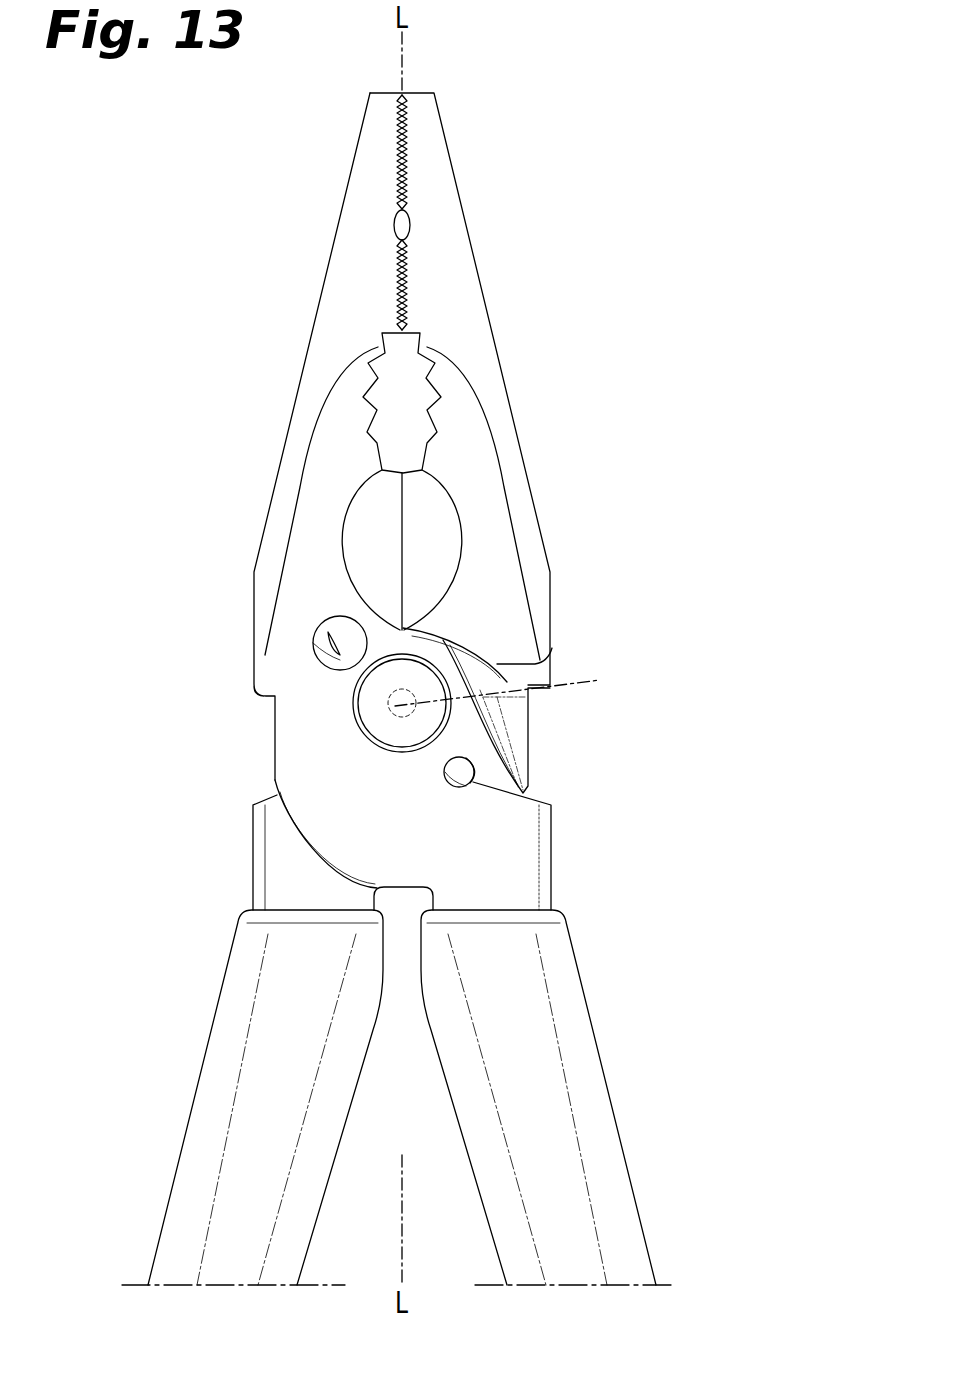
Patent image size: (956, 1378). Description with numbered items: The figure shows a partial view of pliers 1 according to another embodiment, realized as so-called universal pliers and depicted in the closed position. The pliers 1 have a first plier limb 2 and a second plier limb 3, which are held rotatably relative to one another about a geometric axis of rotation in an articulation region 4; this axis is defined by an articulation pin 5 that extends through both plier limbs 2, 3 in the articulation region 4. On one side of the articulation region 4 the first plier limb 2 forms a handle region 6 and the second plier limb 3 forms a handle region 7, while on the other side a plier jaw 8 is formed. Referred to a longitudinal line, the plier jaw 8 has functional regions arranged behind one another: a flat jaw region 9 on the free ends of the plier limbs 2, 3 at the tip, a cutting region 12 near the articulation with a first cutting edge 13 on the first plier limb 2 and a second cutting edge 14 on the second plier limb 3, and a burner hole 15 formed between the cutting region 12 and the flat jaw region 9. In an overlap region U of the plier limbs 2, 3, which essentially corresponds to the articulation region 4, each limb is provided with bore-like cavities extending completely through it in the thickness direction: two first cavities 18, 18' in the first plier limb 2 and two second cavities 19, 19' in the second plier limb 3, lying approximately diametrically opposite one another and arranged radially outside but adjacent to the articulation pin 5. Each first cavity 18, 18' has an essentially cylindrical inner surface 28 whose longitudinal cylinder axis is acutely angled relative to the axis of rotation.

The pliers 1 is at (545, 163).
The first plier limb 2 is at (604, 1213).
The second plier limb 3 is at (220, 1202).
The articulation region 4 is at (316, 757).
The articulation pin 5 is at (368, 710).
The handle region 6 is at (578, 1126).
The handle region 7 is at (255, 1085).
The plier jaw 8 is at (284, 350).
The flat jaw region 9 is at (376, 212).
The cutting region 12 is at (450, 523).
The first cutting edge 13 is at (425, 512).
The second cutting edge 14 is at (380, 532).
The burner hole 15 is at (402, 393).
The first cavity 18 is at (548, 824).
The first cavity 18' is at (248, 646).
The second cavity 19 is at (548, 760).
The second cavity 19' is at (269, 596).
The cylindrical inner surface 28 is at (322, 640).
The overlap region U is at (343, 773).